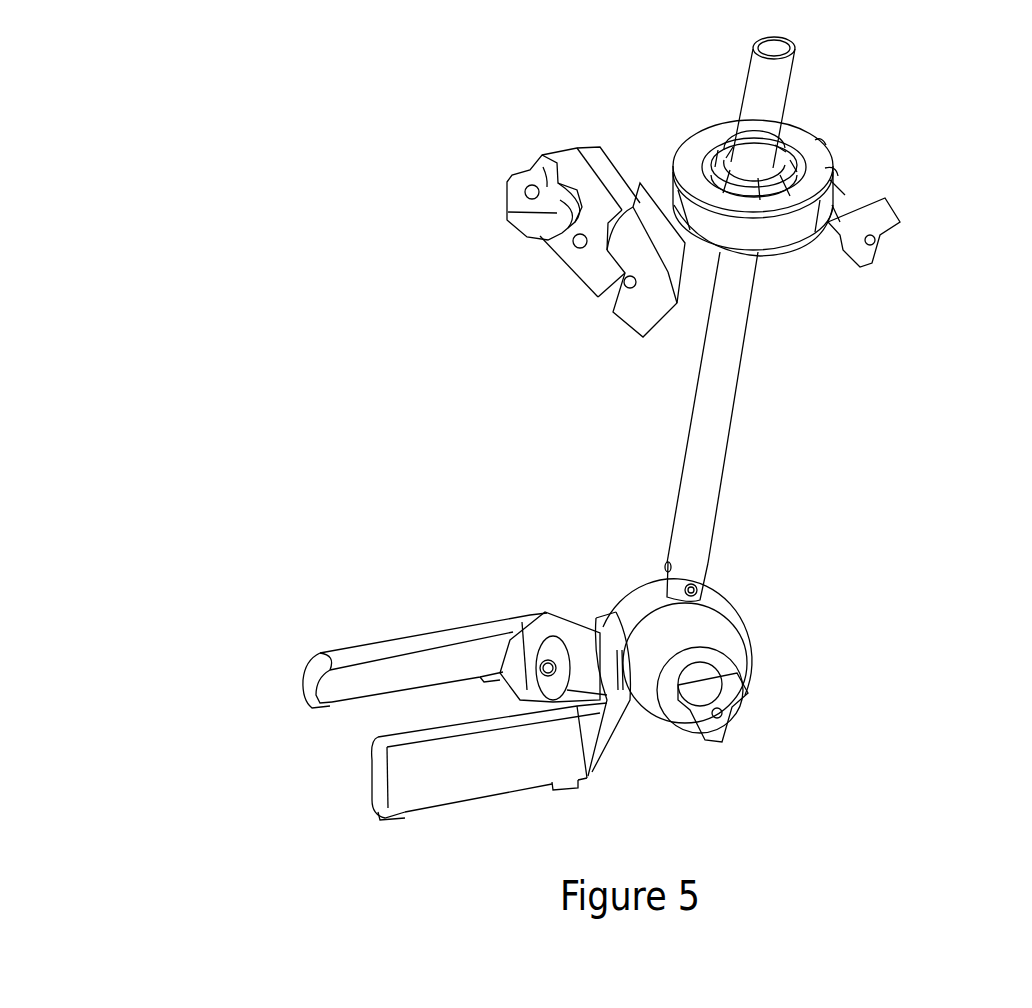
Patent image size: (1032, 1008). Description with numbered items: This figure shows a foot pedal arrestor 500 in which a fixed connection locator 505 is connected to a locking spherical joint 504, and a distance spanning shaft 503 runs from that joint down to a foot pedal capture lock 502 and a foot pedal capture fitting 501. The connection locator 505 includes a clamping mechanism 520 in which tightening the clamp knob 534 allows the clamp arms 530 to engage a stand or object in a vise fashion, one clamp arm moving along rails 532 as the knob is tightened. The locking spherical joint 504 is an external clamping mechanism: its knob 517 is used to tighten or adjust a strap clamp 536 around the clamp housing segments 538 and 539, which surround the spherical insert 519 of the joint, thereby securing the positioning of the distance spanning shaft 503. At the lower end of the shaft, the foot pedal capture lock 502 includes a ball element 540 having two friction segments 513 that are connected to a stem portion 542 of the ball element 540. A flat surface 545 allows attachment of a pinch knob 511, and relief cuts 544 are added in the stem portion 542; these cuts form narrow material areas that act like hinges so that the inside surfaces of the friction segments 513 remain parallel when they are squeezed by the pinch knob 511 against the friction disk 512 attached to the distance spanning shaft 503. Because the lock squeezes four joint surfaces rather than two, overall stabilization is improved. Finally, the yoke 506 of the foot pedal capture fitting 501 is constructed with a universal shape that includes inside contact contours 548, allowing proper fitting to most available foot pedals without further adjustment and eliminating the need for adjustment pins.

The foot pedal arrestor 500 is at (262, 203).
The foot pedal capture fitting 501 is at (422, 590).
The foot pedal capture lock 502 is at (857, 717).
The distance spanning shaft 503 is at (720, 432).
The locking spherical joint 504 is at (868, 142).
The connection locator 505 is at (483, 226).
The yoke 506 is at (362, 648).
The pinch knob 511 is at (730, 703).
The friction disk 512 is at (720, 593).
The friction segments 513 is at (650, 638).
The knob 517 is at (888, 230).
The spherical insert 519 is at (782, 185).
The clamping mechanism 520 is at (553, 135).
The clamp arms 530 is at (650, 178).
The rails 532 is at (579, 248).
The clamp knob 534 is at (533, 167).
The strap clamp 536 is at (780, 230).
The clamp housing segment 538 is at (797, 140).
The clamp housing segment 539 is at (705, 132).
The ball element 540 is at (755, 625).
The stem portion 542 is at (592, 628).
The relief cuts 544 is at (627, 697).
The flat surface 545 is at (720, 657).
The inside contact contours 548 is at (372, 677).